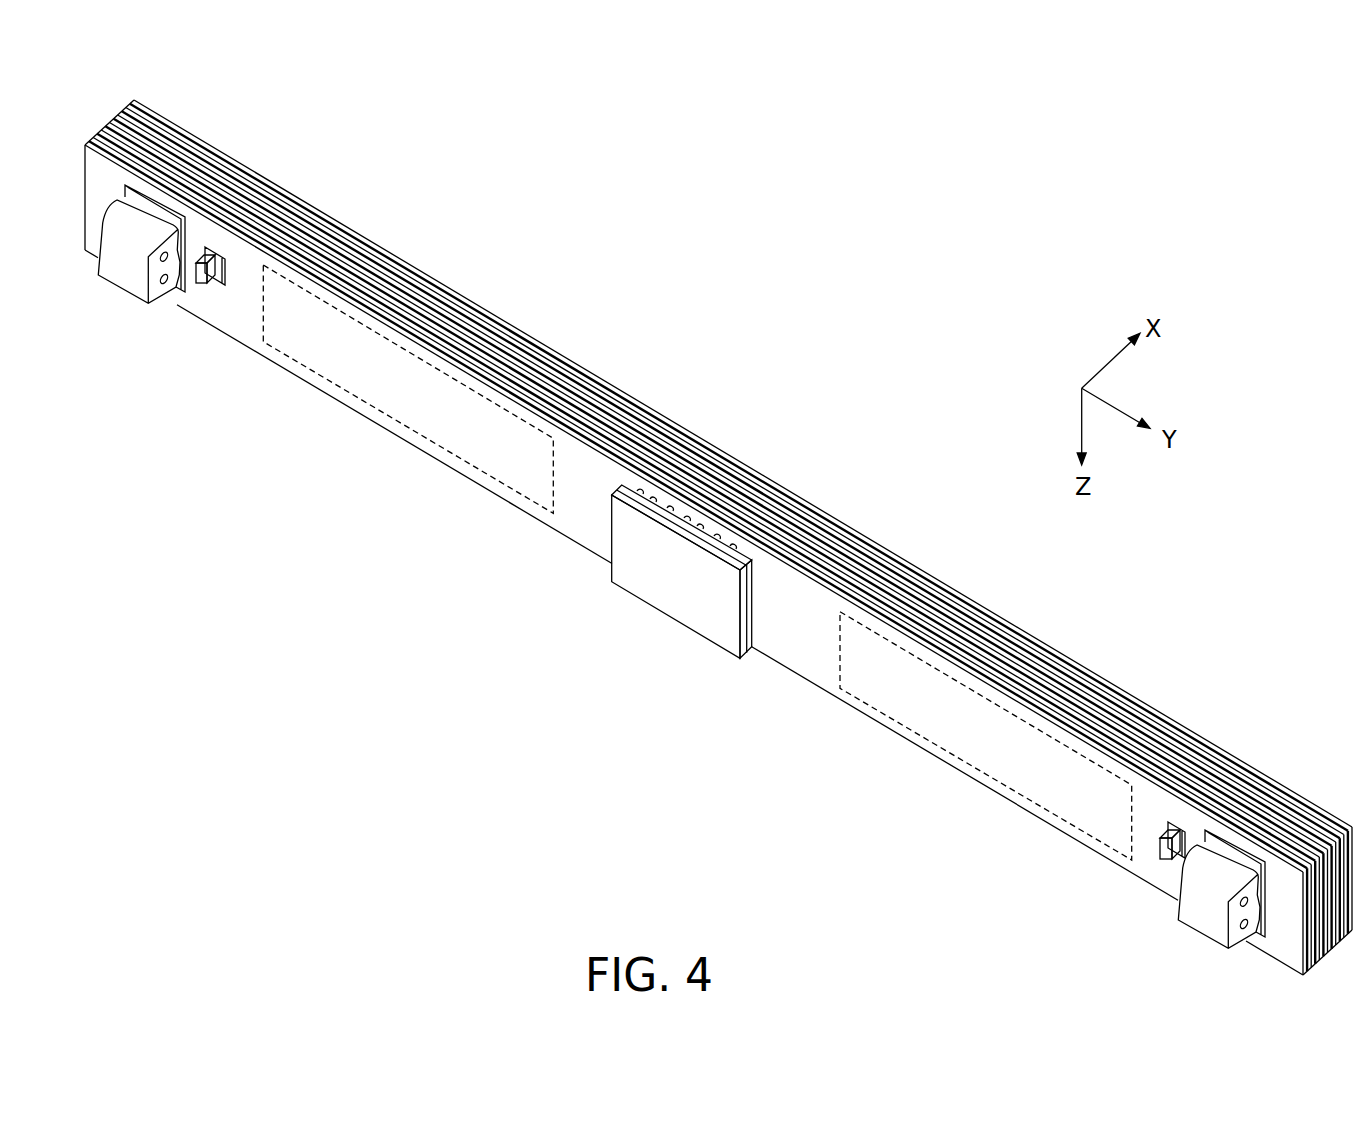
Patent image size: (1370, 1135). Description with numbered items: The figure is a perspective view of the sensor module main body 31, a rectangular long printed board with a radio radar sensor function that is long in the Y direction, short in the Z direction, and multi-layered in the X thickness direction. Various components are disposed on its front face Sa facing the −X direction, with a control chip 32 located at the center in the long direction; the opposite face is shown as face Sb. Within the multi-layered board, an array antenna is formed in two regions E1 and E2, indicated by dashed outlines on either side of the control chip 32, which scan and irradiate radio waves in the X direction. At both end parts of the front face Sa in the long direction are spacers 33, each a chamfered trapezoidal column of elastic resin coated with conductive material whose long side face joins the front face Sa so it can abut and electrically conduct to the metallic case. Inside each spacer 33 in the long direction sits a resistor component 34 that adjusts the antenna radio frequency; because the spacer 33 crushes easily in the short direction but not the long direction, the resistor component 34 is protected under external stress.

The sensor module main body 31 is at (718, 537).
The control chip 32 is at (665, 592).
The spacer 33 is at (125, 272).
The resistor component 34 is at (198, 280).
The front face Sa is at (802, 632).
The top surface Sb is at (830, 513).
The region E1 is at (373, 405).
The region E2 is at (933, 743).